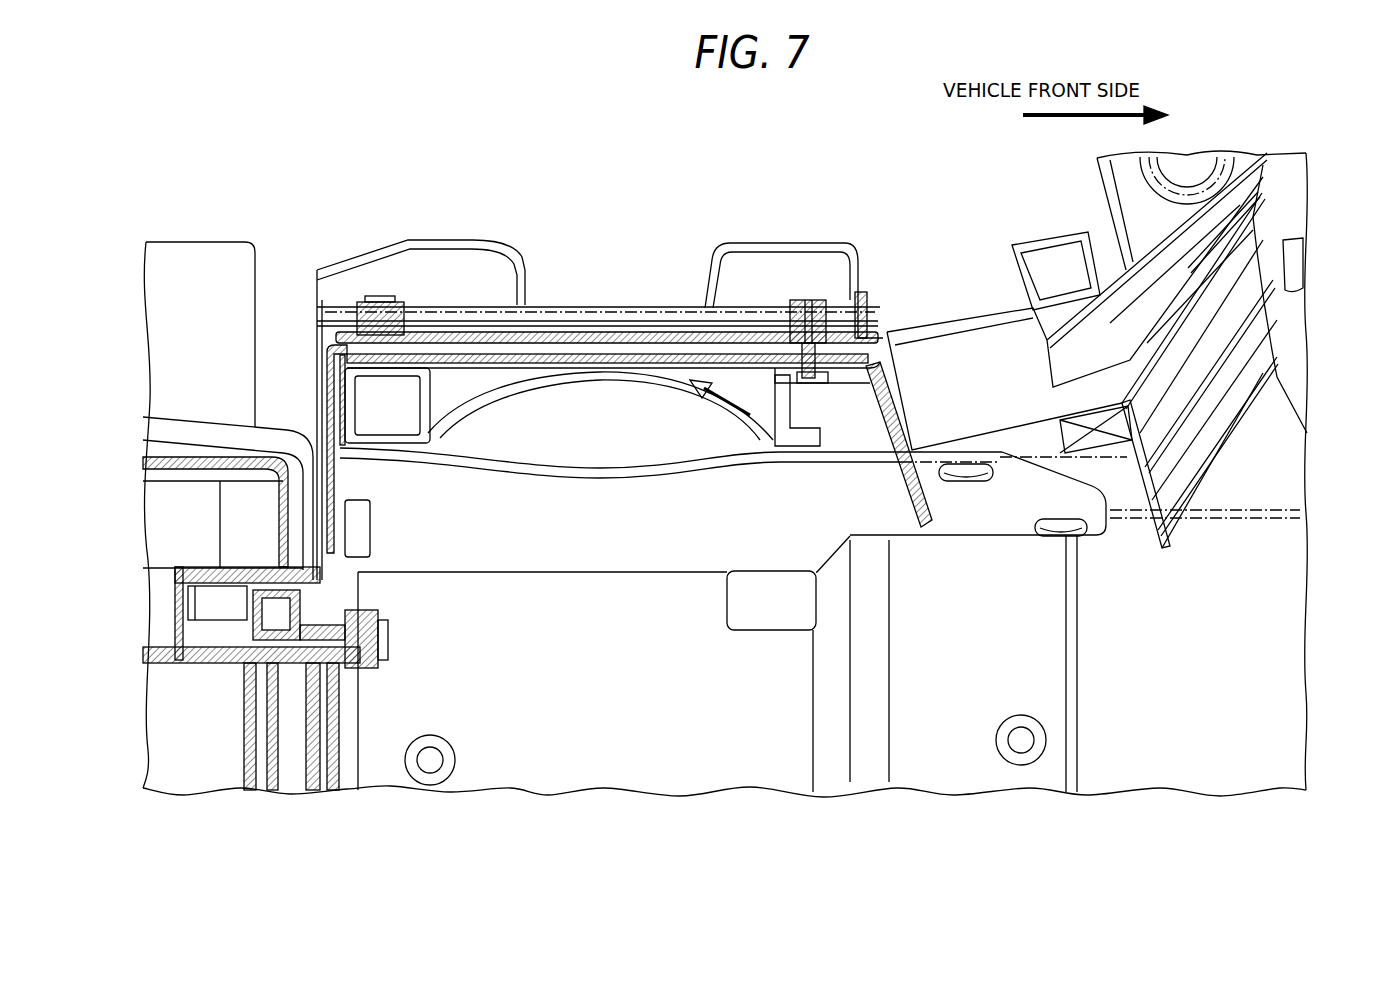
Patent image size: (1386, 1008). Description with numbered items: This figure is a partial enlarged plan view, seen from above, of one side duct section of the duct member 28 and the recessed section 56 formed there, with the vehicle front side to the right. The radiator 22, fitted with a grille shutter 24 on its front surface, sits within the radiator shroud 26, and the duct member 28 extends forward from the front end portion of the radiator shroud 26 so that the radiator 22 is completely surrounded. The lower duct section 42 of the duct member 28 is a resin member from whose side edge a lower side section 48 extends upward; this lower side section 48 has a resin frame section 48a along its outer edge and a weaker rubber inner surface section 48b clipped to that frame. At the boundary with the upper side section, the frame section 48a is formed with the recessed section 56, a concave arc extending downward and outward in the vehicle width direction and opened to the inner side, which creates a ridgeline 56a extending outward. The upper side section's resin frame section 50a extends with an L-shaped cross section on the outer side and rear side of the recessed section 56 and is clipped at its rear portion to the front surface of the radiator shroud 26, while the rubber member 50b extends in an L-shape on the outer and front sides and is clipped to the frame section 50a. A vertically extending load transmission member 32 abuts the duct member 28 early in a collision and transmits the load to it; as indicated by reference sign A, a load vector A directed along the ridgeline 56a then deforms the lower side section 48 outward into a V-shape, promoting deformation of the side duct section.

The radiator 22 is at (184, 810).
The grille shutter 24 is at (341, 742).
The radiator shroud 26 is at (196, 240).
The duct member 28 is at (642, 298).
The load transmission member 32 is at (1307, 433).
The lower duct section 42 is at (1195, 744).
The lower side section 48 is at (726, 760).
The frame section 48a is at (815, 300).
The inner surface section 48b is at (544, 542).
The frame section 50a is at (315, 360).
The inner surface 50b is at (457, 374).
The recessed section 56 is at (603, 421).
The ridgeline 56a is at (665, 392).
The load vector A is at (710, 455).